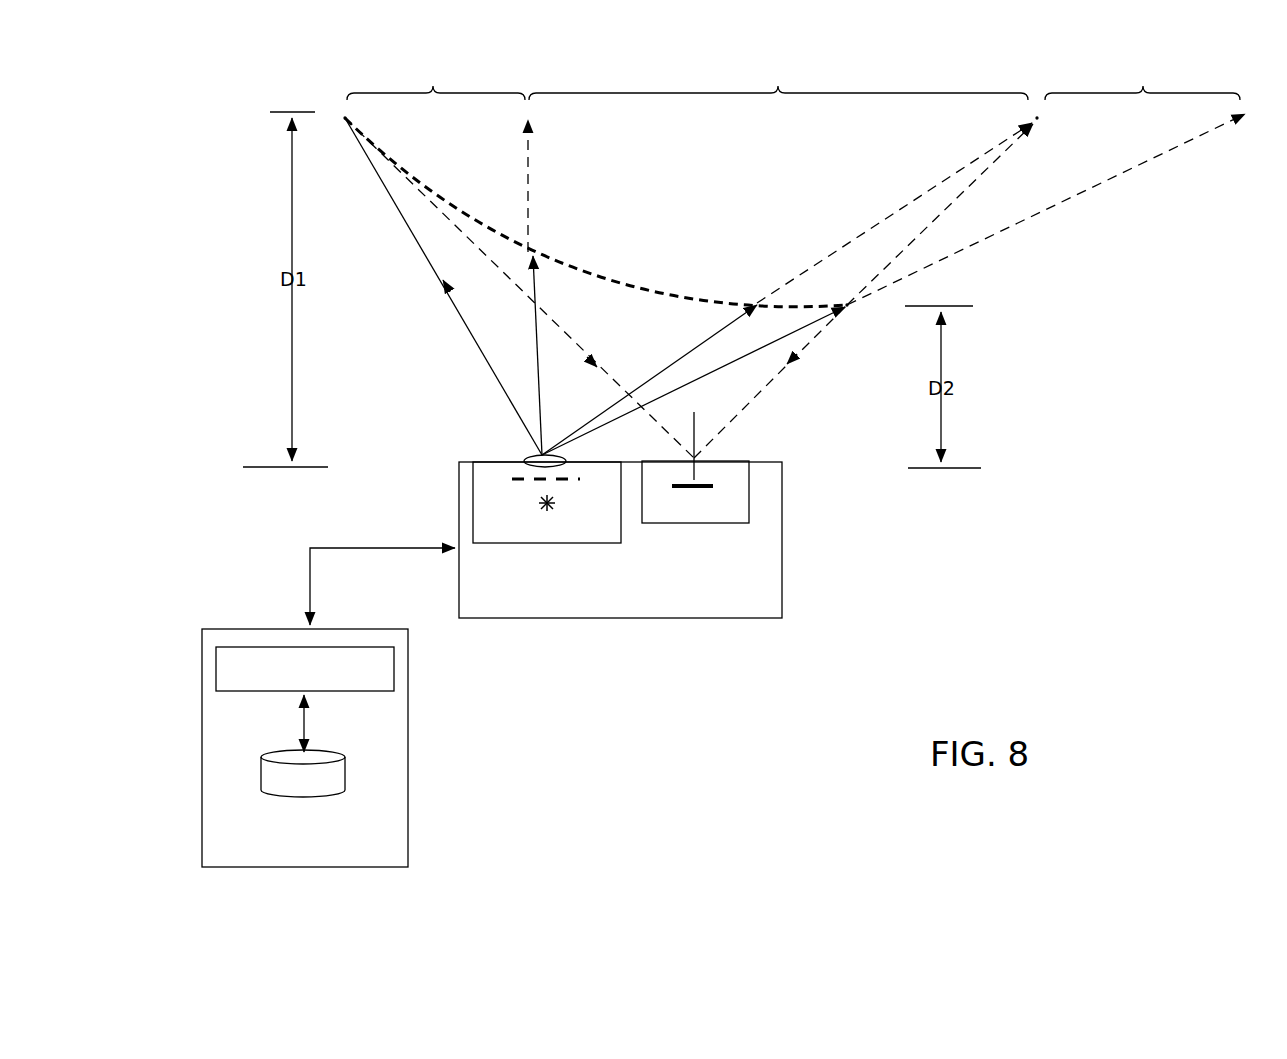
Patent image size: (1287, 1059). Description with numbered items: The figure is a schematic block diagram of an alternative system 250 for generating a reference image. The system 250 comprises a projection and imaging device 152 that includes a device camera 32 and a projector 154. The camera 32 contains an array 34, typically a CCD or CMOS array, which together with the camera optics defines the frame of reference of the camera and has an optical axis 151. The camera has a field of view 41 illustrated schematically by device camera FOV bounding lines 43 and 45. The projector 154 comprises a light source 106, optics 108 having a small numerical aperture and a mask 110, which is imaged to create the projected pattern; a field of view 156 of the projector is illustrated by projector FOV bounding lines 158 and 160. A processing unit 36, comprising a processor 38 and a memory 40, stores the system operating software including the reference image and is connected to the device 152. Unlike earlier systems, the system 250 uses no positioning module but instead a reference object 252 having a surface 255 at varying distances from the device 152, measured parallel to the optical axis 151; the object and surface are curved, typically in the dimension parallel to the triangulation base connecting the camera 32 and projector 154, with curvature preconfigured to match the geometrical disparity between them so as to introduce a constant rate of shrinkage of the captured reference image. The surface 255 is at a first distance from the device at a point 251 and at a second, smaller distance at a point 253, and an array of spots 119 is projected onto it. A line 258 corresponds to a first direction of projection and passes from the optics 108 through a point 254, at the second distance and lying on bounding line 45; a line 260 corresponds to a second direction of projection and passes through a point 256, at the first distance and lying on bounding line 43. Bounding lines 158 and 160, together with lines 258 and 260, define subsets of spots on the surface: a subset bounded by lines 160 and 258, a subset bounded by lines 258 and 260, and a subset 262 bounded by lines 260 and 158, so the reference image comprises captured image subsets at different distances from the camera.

The device camera 32 is at (749, 490).
The array 34 is at (718, 486).
The processing unit 36 is at (204, 785).
The processor 38 is at (218, 666).
The memory 40 is at (347, 778).
The field of view 41 is at (708, 337).
The device camera FOV bounding line 43 is at (958, 198).
The device camera FOV bounding line 45 is at (450, 222).
The light source 106 is at (538, 504).
The optics 108 is at (520, 460).
The mask 110 is at (513, 477).
The array of spots 119 is at (677, 234).
The optical axis 151 is at (697, 424).
The projection and imaging device 152 is at (782, 530).
The projector 154 is at (478, 477).
The field of view 156 is at (588, 394).
The projector FOV bounding line 158 is at (797, 343).
The projector FOV bounding line 160 is at (415, 238).
The system 250 is at (1153, 496).
The point 251 is at (350, 118).
The reference object 252 is at (567, 262).
The point 253 is at (850, 310).
The point 254 is at (535, 308).
The surface 255 is at (680, 296).
The point 256 is at (1040, 118).
The line 258 is at (568, 150).
The line 260 is at (927, 193).
The subset 262 is at (1046, 183).